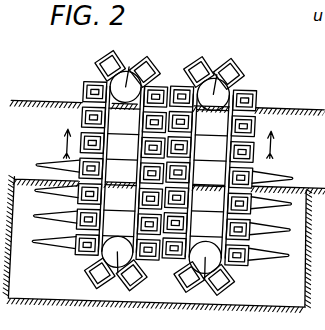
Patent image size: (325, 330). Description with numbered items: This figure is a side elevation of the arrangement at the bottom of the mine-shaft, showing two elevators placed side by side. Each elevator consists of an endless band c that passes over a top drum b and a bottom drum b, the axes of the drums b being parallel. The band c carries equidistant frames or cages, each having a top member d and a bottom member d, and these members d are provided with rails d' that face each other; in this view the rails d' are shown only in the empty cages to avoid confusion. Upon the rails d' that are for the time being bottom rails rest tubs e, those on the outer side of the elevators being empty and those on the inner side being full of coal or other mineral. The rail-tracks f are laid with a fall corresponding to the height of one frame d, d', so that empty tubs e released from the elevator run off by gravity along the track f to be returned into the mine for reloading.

The drum b is at (128, 66).
The frame or cage member d is at (148, 171).
The rails d' is at (263, 76).
The endless band c is at (104, 172).
The tubs e is at (150, 122).
The rail-track f is at (165, 210).